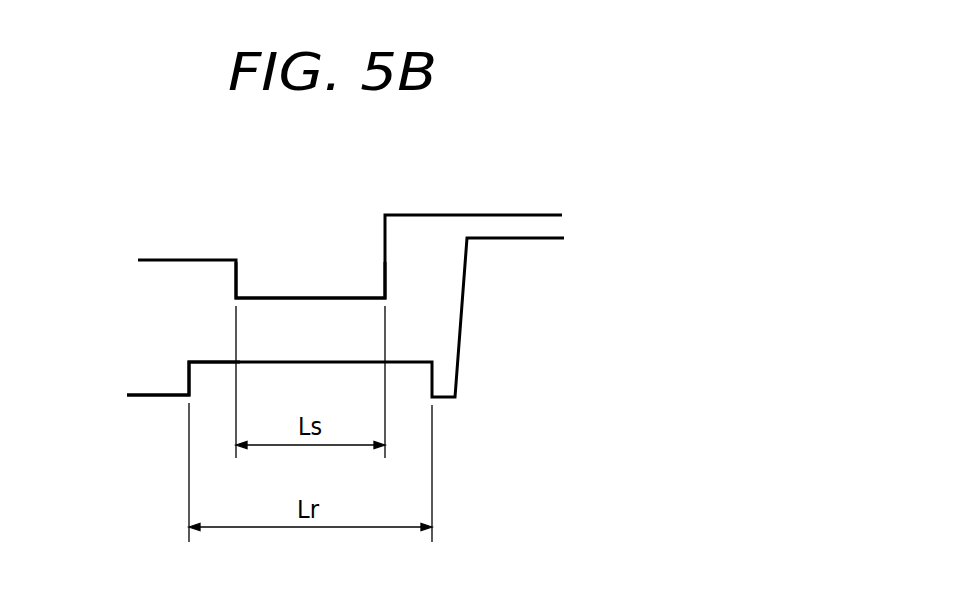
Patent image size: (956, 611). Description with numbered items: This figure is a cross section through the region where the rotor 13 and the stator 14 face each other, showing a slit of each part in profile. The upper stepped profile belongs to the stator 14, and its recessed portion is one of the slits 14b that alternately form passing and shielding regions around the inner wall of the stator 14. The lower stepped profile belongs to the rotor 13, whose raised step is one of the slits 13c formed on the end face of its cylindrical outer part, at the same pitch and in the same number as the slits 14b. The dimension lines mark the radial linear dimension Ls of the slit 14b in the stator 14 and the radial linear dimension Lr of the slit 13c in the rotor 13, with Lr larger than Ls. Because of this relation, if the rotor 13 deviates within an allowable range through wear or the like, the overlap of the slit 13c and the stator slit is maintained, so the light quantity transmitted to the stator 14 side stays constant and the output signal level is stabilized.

The stator 14 is at (473, 178).
The slits 14b is at (300, 298).
The rotor 13 is at (512, 297).
The slits 13c is at (213, 355).